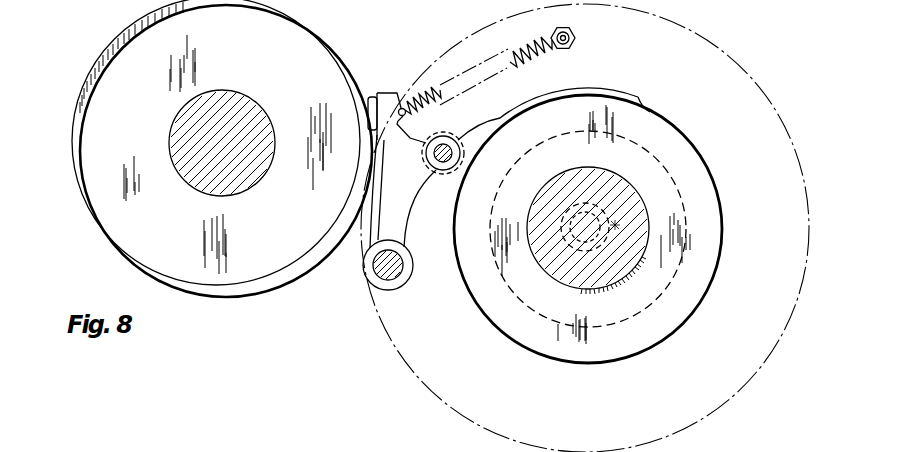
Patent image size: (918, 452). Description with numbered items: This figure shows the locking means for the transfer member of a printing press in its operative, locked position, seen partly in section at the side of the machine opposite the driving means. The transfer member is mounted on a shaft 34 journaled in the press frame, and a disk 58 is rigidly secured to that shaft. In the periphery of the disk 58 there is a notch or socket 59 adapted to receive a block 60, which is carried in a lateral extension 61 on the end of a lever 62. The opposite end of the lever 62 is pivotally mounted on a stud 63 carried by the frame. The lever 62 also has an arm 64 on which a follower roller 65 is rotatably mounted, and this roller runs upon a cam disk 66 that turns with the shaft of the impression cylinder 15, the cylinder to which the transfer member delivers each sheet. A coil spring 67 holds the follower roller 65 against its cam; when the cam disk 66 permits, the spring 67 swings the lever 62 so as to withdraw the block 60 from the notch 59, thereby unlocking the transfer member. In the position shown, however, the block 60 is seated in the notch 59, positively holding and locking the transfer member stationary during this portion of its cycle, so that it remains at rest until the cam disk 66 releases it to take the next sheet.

The impression cylinder 15 is at (631, 188).
The shaft 34 is at (213, 187).
The disk 58 is at (86, 133).
The notch 59 is at (368, 114).
The block 60 is at (369, 122).
The lateral extension 61 is at (397, 100).
The lever 62 is at (407, 216).
The stud 63 is at (408, 283).
The arm 64 is at (430, 176).
The follower roller 65 is at (457, 142).
The cam disk 66 is at (672, 132).
The coil spring 67 is at (512, 58).